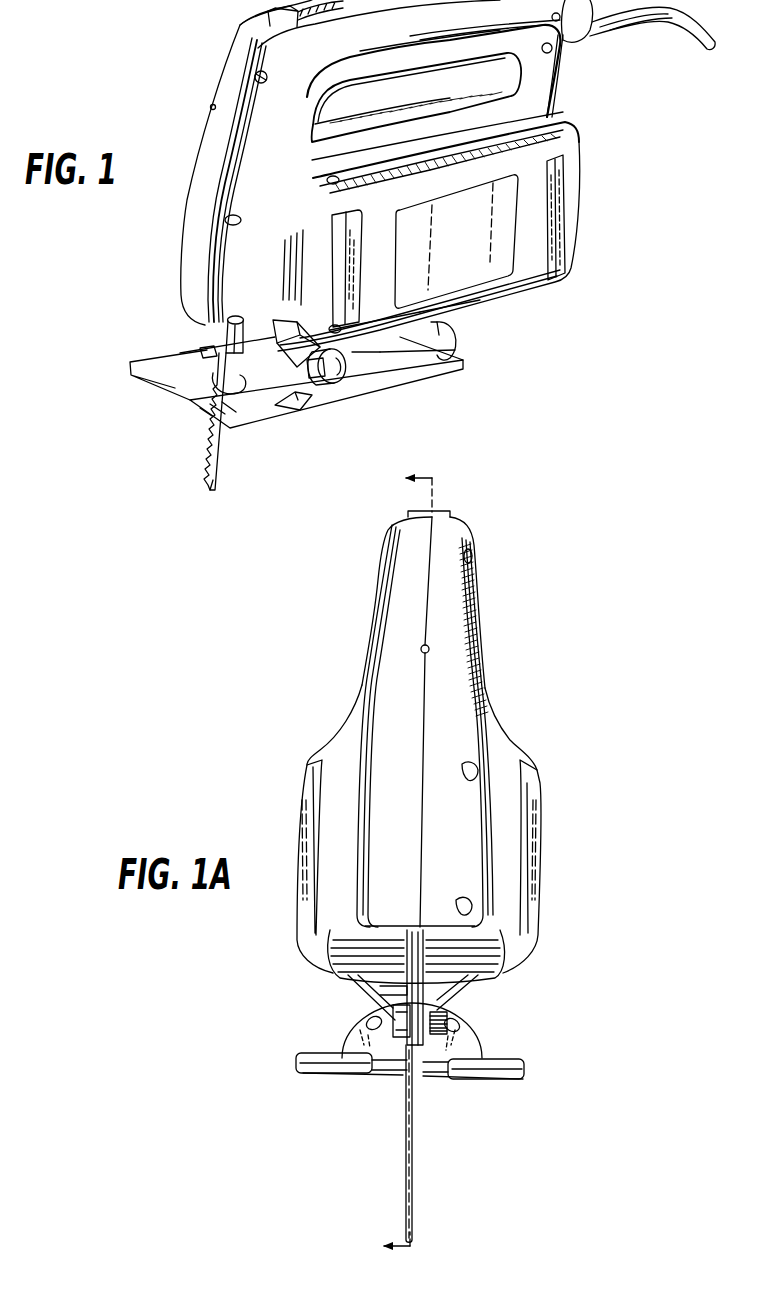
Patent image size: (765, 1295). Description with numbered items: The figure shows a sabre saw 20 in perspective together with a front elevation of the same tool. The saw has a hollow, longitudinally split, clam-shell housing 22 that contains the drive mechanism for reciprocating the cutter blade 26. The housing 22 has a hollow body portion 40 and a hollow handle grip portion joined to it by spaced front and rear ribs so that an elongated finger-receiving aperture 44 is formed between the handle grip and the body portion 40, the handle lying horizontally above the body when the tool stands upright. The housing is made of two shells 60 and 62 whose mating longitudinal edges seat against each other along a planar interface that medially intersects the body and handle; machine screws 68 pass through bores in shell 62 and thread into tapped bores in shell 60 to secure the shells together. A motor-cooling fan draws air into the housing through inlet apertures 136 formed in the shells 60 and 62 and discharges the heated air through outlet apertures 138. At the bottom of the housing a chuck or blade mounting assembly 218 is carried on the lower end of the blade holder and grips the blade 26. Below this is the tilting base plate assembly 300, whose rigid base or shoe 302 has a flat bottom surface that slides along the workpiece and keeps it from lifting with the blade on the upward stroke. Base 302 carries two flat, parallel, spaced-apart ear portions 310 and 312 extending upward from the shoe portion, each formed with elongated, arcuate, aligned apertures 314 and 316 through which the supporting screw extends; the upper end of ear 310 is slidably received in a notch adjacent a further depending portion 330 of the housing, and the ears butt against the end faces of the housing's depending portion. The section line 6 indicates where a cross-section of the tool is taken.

In FIG. 1A, the section line 6- 6 is at (416, 861).
In FIG. 1, the sabre saw 20 is at (572, 279).
In FIG. 1A, the sabre saw 20 is at (518, 660).
In FIG. 1, the housing 22 is at (580, 145).
In FIG. 1A, the housing 22 is at (490, 602).
In FIG. 1, the cutter blade 26 is at (222, 464).
In FIG. 1A, the cutter blade 26 is at (404, 1125).
In FIG. 1, the body portion 40 is at (477, 306).
In FIG. 1, the finger-receiving aperture 44 is at (503, 78).
In FIG. 1, the shell 60 is at (229, 57).
In FIG. 1A, the shell 60 is at (381, 574).
In FIG. 1, the shell 62 is at (548, 118).
In FIG. 1A, the shell 62 is at (480, 583).
In FIG. 1, the machine screws 68 is at (268, 77).
In FIG. 1, the inlet apertures 136 is at (352, 260).
In FIG. 1, the outlet apertures 138 is at (556, 212).
In FIG. 1, the blade mounting assembly 218 is at (216, 334).
In FIG. 1A, the blade mounting assembly 218 is at (444, 999).
In FIG. 1, the tilting base plate assembly 300 is at (392, 398).
In FIG. 1A, the tilting base plate assembly 300 is at (307, 1053).
In FIG. 1, the base 302 is at (445, 378).
In FIG. 1A, the base 302 is at (497, 1058).
In FIG. 1, the ear portion 310 is at (348, 364).
In FIG. 1A, the ear portion 310 is at (463, 1034).
In FIG. 1, the ear portion 312 is at (456, 351).
In FIG. 1, the aperture 314 is at (307, 370).
In FIG. 1A, the aperture 314 is at (393, 1018).
In FIG. 1, the aperture 316 is at (452, 338).
In FIG. 1, the depending portion 330 is at (285, 346).
In FIG. 1A, the depending portion 330 is at (372, 997).